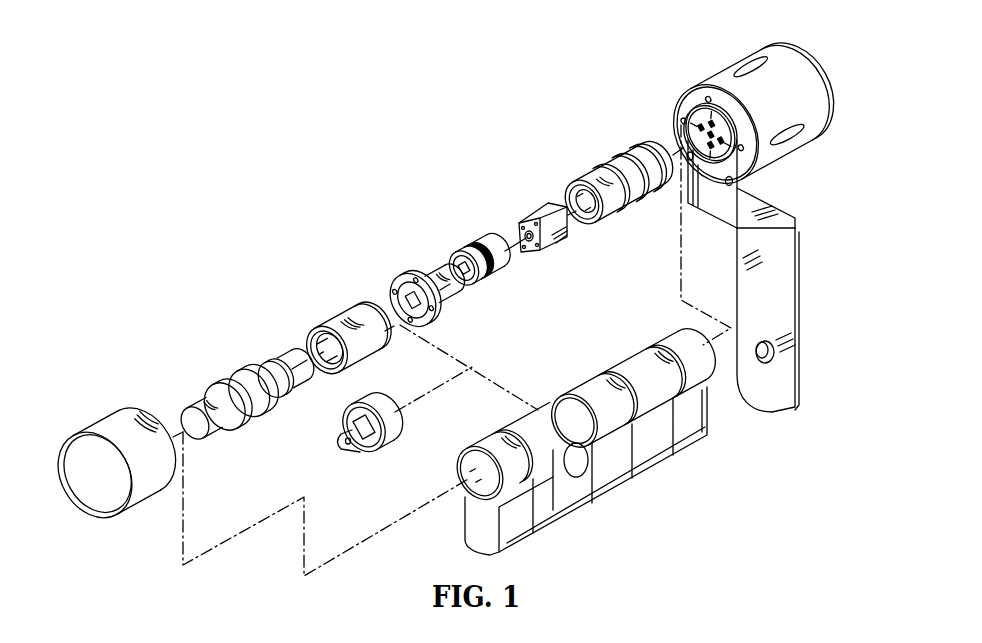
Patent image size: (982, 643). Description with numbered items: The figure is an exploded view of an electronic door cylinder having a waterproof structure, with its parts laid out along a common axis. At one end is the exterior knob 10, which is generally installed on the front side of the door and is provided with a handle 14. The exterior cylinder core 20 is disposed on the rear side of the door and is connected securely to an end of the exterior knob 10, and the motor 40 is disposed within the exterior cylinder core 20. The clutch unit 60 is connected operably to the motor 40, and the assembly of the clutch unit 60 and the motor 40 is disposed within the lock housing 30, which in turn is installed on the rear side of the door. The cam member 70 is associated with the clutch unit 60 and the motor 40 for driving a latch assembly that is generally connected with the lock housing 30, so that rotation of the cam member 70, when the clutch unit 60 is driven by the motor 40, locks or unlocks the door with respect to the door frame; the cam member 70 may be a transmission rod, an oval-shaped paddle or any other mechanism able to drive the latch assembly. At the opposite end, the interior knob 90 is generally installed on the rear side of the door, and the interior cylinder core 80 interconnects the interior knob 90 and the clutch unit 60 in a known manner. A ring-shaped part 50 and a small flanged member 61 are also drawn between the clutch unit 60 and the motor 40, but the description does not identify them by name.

The exterior knob 10 is at (745, 68).
The handle 14 is at (777, 317).
The exterior cylinder core 20 is at (595, 178).
The lock housing 30 is at (652, 446).
The motor 40 is at (548, 218).
The clutch ring 50 is at (476, 248).
The clutch unit 60 is at (432, 232).
The cam shaft 61 is at (443, 300).
The cam member 70 is at (393, 428).
The interior cylinder core 80 is at (240, 380).
The interior knob 90 is at (115, 430).